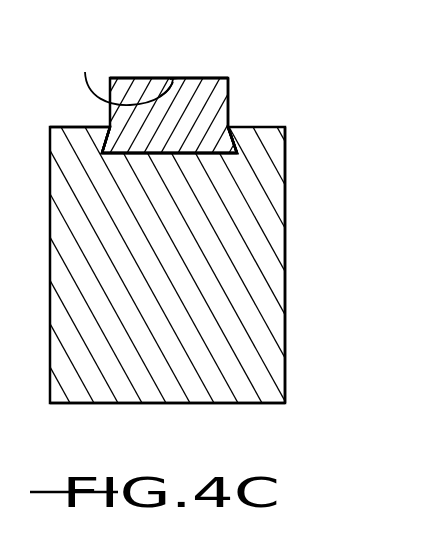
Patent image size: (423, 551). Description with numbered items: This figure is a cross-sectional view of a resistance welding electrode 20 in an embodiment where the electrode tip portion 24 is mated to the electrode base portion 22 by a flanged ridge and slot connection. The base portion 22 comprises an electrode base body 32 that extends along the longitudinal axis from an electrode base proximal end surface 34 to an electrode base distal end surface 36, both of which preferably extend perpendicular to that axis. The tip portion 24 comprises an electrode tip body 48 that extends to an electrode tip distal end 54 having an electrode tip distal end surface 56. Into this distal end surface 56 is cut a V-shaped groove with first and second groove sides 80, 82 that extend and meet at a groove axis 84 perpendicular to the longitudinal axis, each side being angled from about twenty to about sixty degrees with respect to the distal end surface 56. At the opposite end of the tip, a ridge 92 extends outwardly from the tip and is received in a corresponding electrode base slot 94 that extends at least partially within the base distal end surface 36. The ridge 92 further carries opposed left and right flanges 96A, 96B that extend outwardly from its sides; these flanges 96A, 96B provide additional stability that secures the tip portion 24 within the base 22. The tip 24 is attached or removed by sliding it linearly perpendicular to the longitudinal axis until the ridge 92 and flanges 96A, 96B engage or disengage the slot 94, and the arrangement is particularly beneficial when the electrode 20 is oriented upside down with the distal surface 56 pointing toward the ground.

The resistance welding electrode 20 is at (238, 60).
The electrode base portion 22 is at (260, 242).
The electrode tip portion 24 is at (123, 88).
The electrode base body 32 is at (273, 285).
The electrode base proximal end surface 34 is at (97, 411).
The electrode base distal end surface 36 is at (64, 121).
The electrode tip body 48 is at (220, 108).
The electrode tip distal end 54 is at (207, 78).
The electrode tip distal end surface 56 is at (130, 72).
The first groove side 80 is at (167, 89).
The second groove side 82 is at (170, 79).
The groove axis 84 is at (85, 72).
The ridge 92 is at (132, 140).
The electrode base slot 94 is at (236, 152).
The left flange 96A is at (105, 148).
The right flange 96B is at (232, 150).